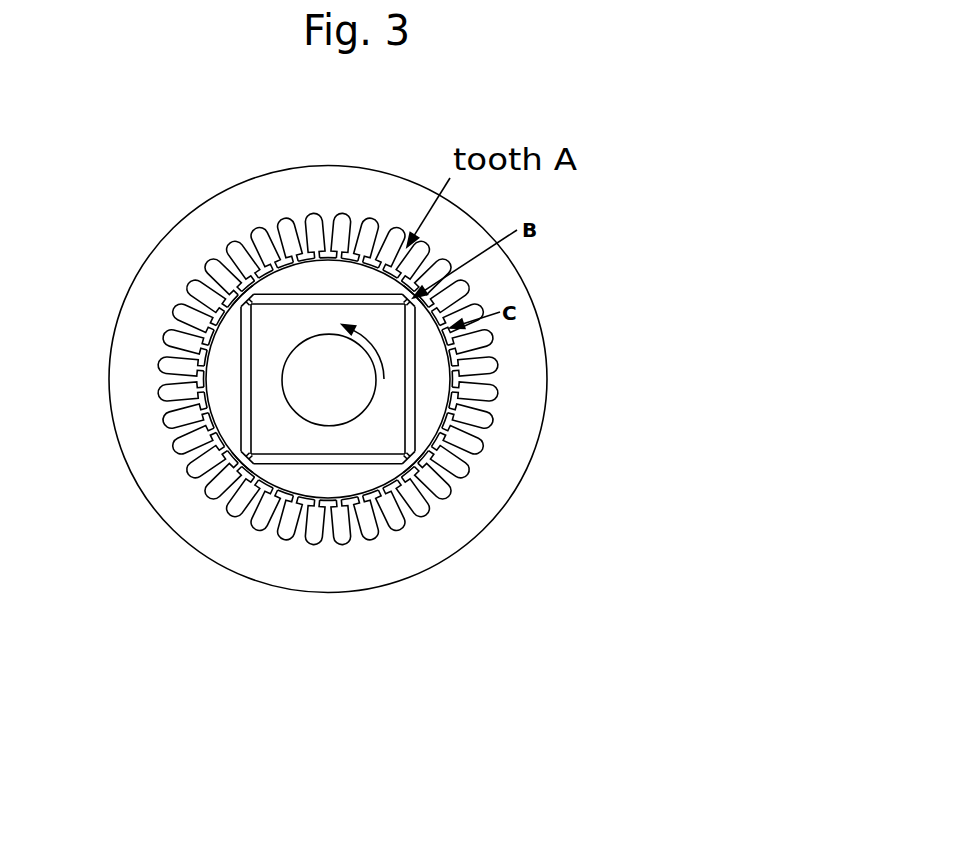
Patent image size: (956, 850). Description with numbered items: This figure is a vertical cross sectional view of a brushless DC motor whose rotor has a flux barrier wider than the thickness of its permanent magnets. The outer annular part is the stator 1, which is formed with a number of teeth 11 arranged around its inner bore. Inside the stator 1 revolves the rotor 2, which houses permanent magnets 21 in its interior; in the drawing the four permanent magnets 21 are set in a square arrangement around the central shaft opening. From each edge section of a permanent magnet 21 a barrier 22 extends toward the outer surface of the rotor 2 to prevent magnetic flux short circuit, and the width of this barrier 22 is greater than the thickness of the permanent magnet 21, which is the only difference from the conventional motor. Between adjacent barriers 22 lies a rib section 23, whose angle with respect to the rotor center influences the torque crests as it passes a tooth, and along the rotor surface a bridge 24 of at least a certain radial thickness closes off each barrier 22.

The stator 1 is at (328, 342).
The teeth 11 is at (310, 245).
The rotor 2 is at (403, 469).
The permanent magnet 21 is at (333, 460).
The barrier 22 is at (403, 471).
The rib section 23 is at (243, 462).
The bridge 24 is at (247, 470).